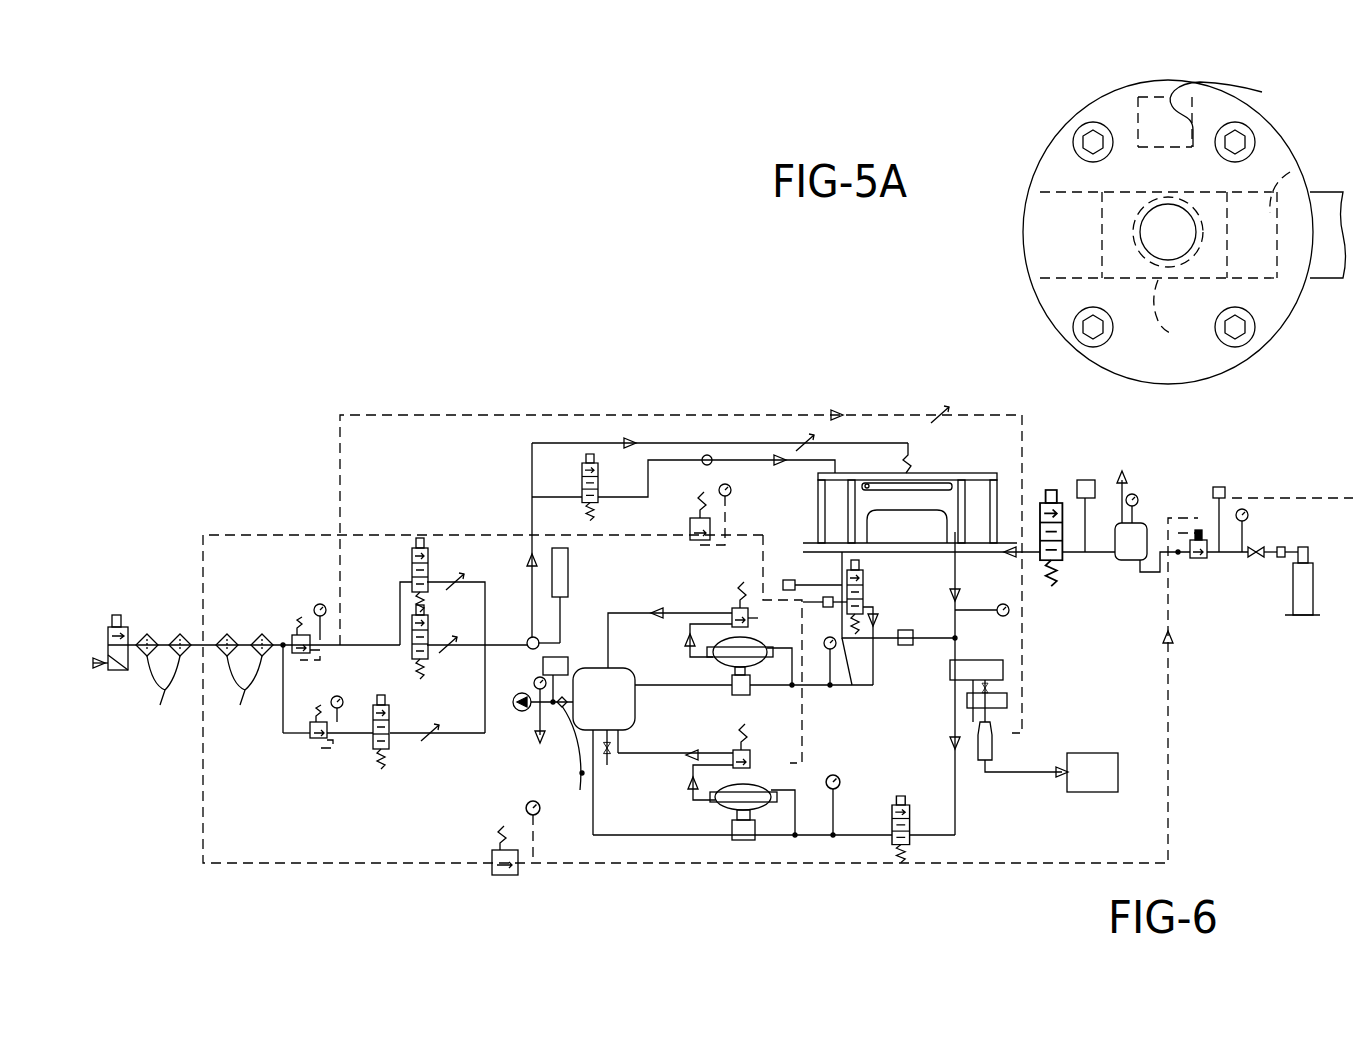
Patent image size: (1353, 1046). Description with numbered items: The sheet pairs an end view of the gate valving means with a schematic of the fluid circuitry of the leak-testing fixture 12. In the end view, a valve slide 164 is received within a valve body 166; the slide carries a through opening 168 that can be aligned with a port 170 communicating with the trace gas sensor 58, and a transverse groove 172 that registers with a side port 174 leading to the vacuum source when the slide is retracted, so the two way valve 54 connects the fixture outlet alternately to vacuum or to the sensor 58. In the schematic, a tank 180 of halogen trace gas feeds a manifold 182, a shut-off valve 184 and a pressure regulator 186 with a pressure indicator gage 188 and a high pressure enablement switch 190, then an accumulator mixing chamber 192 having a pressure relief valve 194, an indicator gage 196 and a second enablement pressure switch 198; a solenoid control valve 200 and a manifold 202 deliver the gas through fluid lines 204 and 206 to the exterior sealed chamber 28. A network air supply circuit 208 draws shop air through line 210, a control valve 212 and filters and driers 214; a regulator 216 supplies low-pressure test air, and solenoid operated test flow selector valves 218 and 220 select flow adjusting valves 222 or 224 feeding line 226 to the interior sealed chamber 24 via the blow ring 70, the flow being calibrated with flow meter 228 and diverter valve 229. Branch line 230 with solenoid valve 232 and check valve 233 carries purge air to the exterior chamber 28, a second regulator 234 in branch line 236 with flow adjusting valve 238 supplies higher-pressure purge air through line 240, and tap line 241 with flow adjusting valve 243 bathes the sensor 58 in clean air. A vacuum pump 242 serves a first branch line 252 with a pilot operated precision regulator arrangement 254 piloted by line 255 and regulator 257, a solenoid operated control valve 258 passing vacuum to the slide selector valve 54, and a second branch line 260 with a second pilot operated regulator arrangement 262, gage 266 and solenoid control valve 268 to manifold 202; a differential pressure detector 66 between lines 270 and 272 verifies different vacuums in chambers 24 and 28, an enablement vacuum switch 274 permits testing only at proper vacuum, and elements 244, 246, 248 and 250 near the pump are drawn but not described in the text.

In FIG. 6, the fixture 12 is at (1003, 440).
In FIG. 6, the interior sealed chamber 24 is at (915, 509).
In FIG. 6, the exterior sealed chamber 28 is at (846, 521).
In FIG. 6, the two way valve 54 is at (950, 683).
In FIG. 6, the trace gas sensor 58 is at (962, 728).
In FIG. 6, the differential vacuum detector 66 is at (898, 645).
In FIG. 6, the blow ring 70 is at (922, 480).
In FIG. 5A, the valve slide 164 is at (1183, 315).
In FIG. 5A, the valve body 166 is at (1030, 290).
In FIG. 5A, the through opening 168 is at (1143, 243).
In FIG. 5A, the port 170 is at (1087, 232).
In FIG. 5A, the transverse groove 172 is at (1292, 172).
In FIG. 5A, the side port 174 is at (1262, 92).
In FIG. 6, the tank 180 is at (1293, 595).
In FIG. 6, the manifold 182 is at (1300, 545).
In FIG. 6, the shut-off valve 184 is at (1256, 546).
In FIG. 6, the pressure regulator 186 is at (1198, 560).
In FIG. 6, the pressure indicator gage 188 is at (1240, 508).
In FIG. 6, the high pressure enablement switch 190 is at (1213, 488).
In FIG. 6, the accumulator mixing chamber 192 is at (1120, 560).
In FIG. 6, the pressure relief valve 194 is at (1125, 478).
In FIG. 6, the indicator gage 196 is at (1138, 500).
In FIG. 6, the second enablement pressure switch 198 is at (1086, 480).
In FIG. 6, the solenoid control valve 200 is at (1040, 510).
In FIG. 6, the manifold 202 is at (823, 607).
In FIG. 6, the fluid line 204 is at (883, 558).
In FIG. 6, the fluid line 206 is at (812, 572).
In FIG. 6, the network air supply circuit 208 is at (392, 752).
In FIG. 6, the line 210 is at (97, 668).
In FIG. 6, the control valve 212 is at (128, 627).
In FIG. 6, the filters and driers 214 is at (204, 682).
In FIG. 6, the regulator 216 is at (292, 635).
In FIG. 6, the solenoid operated test flow selector valve 218 is at (427, 625).
In FIG. 6, the solenoid operated test flow selector valve 220 is at (412, 560).
In FIG. 6, the flow adjusting valve 222 is at (451, 640).
In FIG. 6, the flow adjusting valve 224 is at (458, 578).
In FIG. 6, the line 226 is at (527, 643).
In FIG. 6, the flow meter 228 is at (570, 568).
In FIG. 6, the diverter valve 229 is at (530, 638).
In FIG. 6, the branch line 230 is at (570, 497).
In FIG. 6, the solenoid valve 232 is at (598, 490).
In FIG. 6, the check valve 233 is at (390, 713).
In FIG. 6, the second regulator 234 is at (310, 722).
In FIG. 6, the branch line 236 is at (283, 733).
In FIG. 6, the flow adjusting valve 238 is at (432, 728).
In FIG. 6, the line 240 is at (485, 660).
In FIG. 6, the tap line 241 is at (630, 415).
In FIG. 6, the vacuum pump 242 is at (520, 712).
In FIG. 6, the flow adjusting valve 243 is at (945, 412).
In FIG. 6, the pressure switch 244 is at (534, 683).
In FIG. 6, the check valve 246 is at (540, 742).
In FIG. 6, the pressure gauge 248 is at (610, 786).
In FIG. 6, the reservoir 250 is at (578, 672).
In FIG. 6, the first branch line 252 is at (655, 828).
In FIG. 6, the pilot operated precision regulator arrangement 254 is at (750, 762).
In FIG. 6, the line 255 is at (630, 535).
In FIG. 6, the regulator 257 is at (690, 525).
In FIG. 6, the solenoid operated control valve 258 is at (910, 822).
In FIG. 6, the second branch line 260 is at (655, 685).
In FIG. 6, the second pilot operated regulator arrangement 262 is at (752, 636).
In FIG. 6, the gage 266 is at (842, 685).
In FIG. 6, the solenoid control valve 268 is at (863, 595).
In FIG. 6, the line 270 is at (958, 636).
In FIG. 6, the line 272 is at (865, 685).
In FIG. 6, the enablement vacuum switch 274 is at (790, 578).